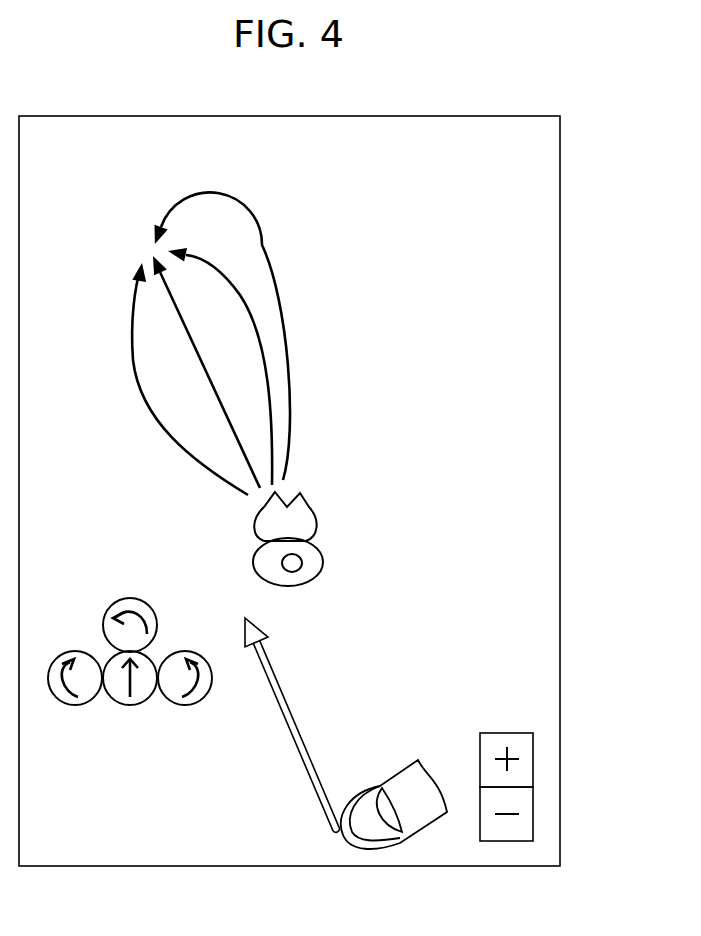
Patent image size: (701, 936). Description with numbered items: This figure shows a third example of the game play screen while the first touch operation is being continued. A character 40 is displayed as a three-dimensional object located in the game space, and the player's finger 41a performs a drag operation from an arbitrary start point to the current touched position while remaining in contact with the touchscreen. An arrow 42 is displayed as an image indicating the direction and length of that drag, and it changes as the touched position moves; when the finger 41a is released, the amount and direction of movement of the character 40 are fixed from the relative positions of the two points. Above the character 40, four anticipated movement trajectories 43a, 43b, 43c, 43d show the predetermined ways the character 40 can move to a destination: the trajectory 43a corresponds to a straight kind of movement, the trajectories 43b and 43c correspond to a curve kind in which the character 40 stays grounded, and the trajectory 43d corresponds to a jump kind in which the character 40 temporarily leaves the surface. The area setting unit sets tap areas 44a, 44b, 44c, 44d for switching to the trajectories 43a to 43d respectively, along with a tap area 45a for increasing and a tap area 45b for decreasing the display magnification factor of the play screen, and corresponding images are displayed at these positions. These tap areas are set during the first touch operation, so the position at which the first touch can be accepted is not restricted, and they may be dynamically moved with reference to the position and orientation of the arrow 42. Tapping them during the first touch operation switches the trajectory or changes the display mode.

The character 40 is at (312, 518).
The finger 41a is at (393, 776).
The arrow 42 is at (292, 736).
The anticipated movement trajectory 43a is at (203, 362).
The anticipated movement trajectory 43b is at (217, 272).
The anticipated movement trajectory 43c is at (142, 397).
The anticipated movement trajectory 43d is at (281, 288).
The tap area 44a is at (130, 705).
The tap area 44b is at (188, 705).
The tap area 44c is at (72, 705).
The tap area 44d is at (130, 598).
The tap area 45a is at (533, 757).
The tap area 45b is at (533, 812).